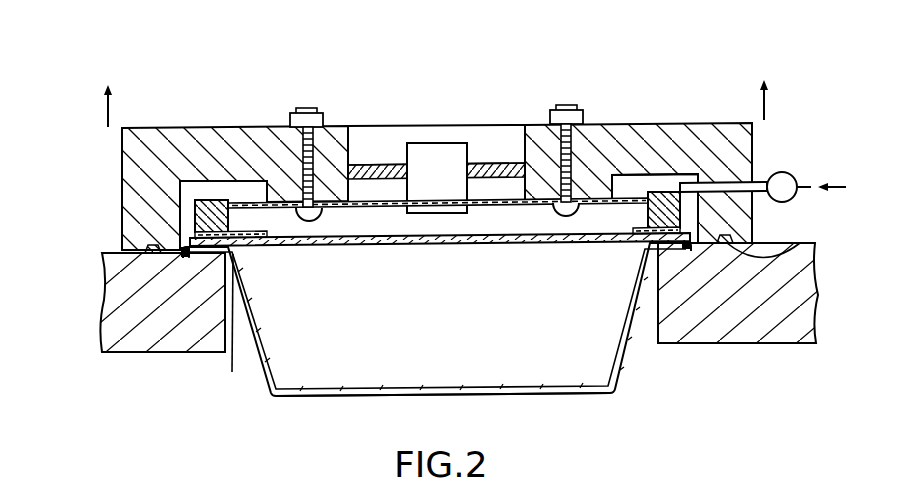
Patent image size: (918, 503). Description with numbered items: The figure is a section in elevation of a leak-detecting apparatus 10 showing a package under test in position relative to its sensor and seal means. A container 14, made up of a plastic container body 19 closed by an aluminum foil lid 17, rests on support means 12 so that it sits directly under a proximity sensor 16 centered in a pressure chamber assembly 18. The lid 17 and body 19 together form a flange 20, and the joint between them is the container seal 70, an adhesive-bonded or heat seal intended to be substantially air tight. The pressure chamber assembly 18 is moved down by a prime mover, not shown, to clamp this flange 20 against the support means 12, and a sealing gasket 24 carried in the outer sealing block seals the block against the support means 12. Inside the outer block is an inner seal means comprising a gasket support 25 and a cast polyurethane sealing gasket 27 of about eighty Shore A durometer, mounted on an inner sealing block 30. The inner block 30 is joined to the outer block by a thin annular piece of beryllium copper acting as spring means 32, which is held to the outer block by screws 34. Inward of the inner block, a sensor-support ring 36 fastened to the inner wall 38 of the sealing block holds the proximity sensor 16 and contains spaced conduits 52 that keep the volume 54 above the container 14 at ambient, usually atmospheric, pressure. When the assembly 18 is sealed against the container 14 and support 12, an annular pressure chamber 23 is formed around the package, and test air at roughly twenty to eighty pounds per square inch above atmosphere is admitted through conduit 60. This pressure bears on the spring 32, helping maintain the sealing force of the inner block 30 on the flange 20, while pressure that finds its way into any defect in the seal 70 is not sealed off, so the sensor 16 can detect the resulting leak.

The leak-detecting apparatus 10 is at (724, 79).
The support means 12 is at (155, 340).
The container 14 is at (488, 356).
The proximity sensor 16 is at (449, 185).
The aluminum foil lid 17 is at (452, 246).
The pressure chamber assembly 18 is at (358, 127).
The container body 19 is at (350, 398).
The flange 20 is at (690, 234).
The pressure chamber 23 is at (190, 191).
The sealing gasket 24 is at (797, 246).
The gasket support 25 is at (205, 198).
The sealing gasket 27 is at (250, 236).
The inner sealing block 30 is at (184, 211).
The spring means 32 is at (247, 202).
The screws 34 is at (312, 221).
The sensor-support ring 36 is at (394, 165).
The inner wall 38 is at (523, 133).
The conduits 52 is at (381, 165).
The volume 54 is at (375, 222).
The conduit 60 is at (775, 173).
The container seal 70 is at (232, 372).